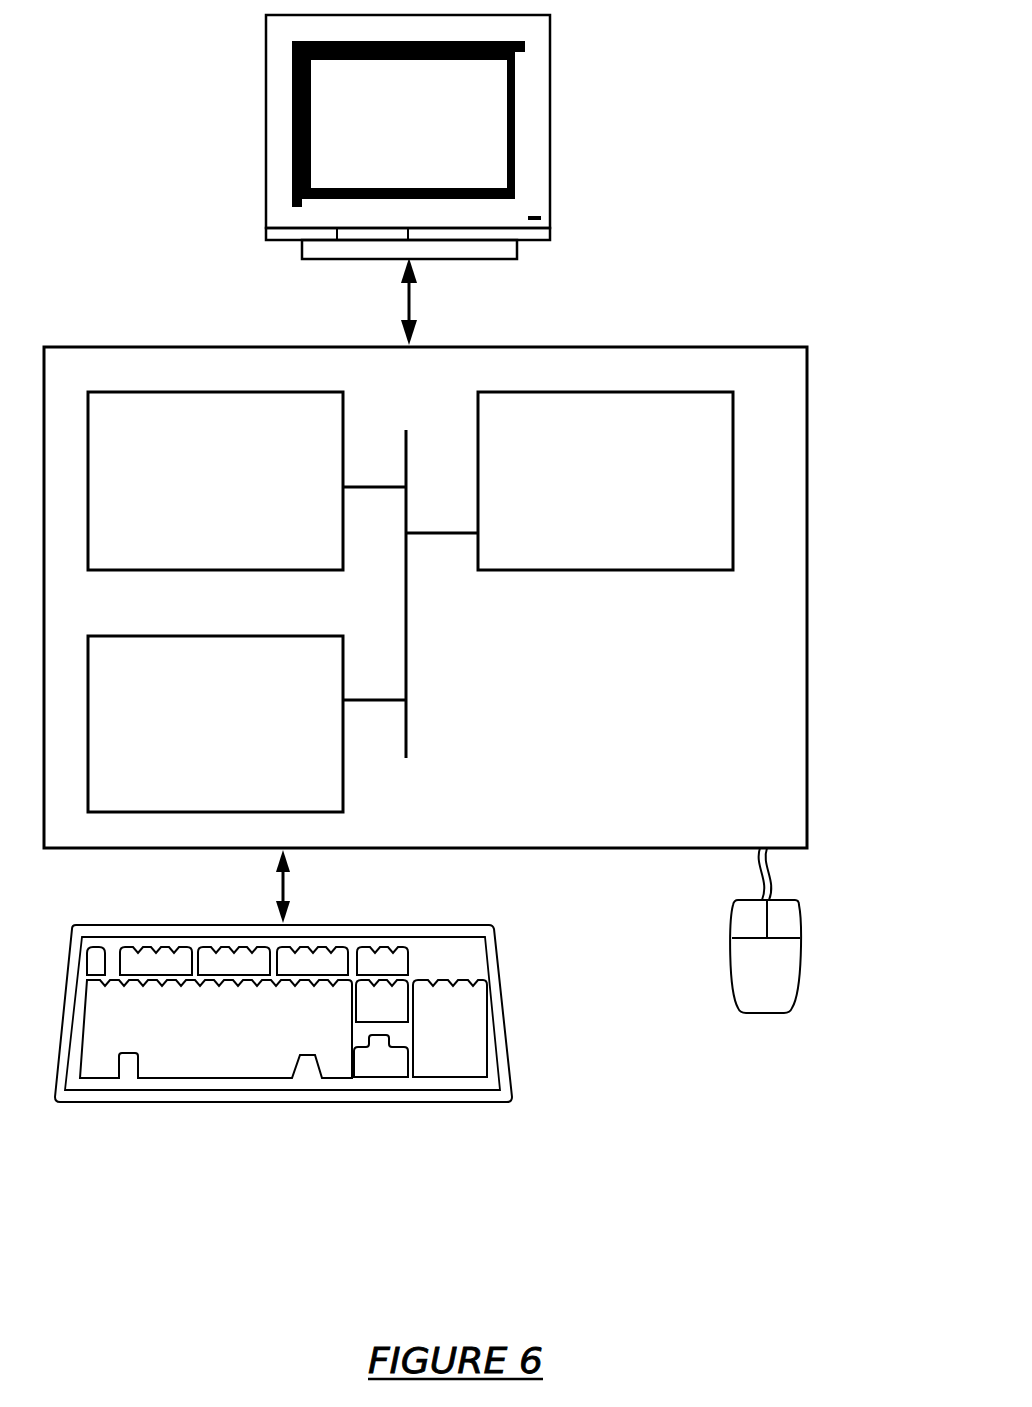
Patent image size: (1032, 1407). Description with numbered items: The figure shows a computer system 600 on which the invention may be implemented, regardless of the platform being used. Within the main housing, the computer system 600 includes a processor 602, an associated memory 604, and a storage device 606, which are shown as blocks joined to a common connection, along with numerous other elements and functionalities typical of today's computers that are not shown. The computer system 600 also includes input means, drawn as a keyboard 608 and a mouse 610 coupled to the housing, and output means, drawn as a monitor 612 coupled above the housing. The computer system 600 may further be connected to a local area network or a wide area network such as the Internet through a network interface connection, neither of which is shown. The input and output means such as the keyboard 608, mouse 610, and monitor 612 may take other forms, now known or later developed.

The computer system 600 is at (830, 182).
The processor 602 is at (582, 492).
The memory 604 is at (192, 493).
The storage device 606 is at (189, 737).
The keyboard 608 is at (187, 1048).
The mouse 610 is at (742, 982).
The monitor 612 is at (385, 140).